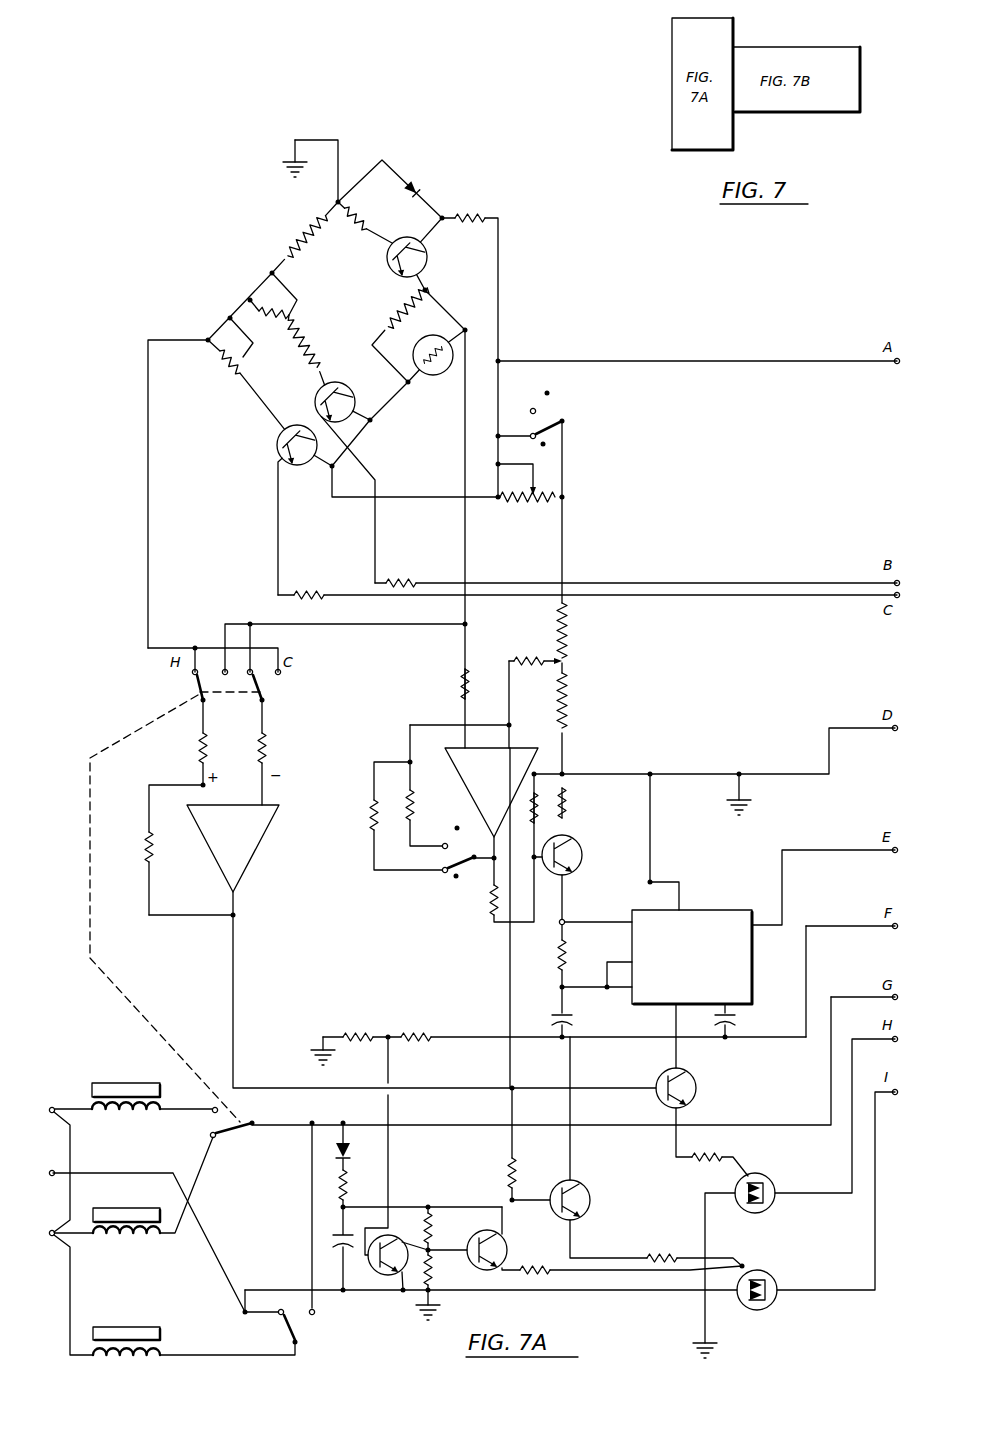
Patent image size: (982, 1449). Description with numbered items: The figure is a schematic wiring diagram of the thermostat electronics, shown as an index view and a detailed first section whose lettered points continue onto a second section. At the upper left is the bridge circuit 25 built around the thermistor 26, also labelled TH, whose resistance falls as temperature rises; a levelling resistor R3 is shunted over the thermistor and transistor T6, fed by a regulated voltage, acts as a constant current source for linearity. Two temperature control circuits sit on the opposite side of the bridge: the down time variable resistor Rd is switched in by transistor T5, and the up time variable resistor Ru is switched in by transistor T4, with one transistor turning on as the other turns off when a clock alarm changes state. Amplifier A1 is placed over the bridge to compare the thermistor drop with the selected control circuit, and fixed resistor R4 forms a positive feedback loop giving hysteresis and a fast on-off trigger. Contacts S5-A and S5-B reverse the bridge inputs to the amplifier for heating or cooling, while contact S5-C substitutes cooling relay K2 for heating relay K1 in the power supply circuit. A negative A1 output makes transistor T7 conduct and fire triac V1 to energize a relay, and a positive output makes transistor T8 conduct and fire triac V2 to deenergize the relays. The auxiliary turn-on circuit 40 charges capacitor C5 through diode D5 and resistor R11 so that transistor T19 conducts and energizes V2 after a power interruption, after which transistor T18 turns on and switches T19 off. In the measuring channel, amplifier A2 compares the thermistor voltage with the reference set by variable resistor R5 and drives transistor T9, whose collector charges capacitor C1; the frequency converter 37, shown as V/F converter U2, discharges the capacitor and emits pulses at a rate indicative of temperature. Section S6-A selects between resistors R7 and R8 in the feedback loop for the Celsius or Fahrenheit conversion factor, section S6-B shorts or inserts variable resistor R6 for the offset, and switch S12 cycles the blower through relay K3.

The bridge circuit 25 is at (278, 250).
The thermistor 26 is at (448, 372).
The frequency converter 37 is at (712, 909).
The auxiliary turn-on circuit 40 is at (423, 1198).
The variable resistor Ru is at (241, 373).
The variable resistor Rd is at (287, 329).
The levelling resistor R3 is at (400, 333).
The fixed resistor R4 is at (174, 850).
The variable resistor R5 is at (551, 688).
The variable resistor R6 is at (530, 491).
The resistor R7 is at (394, 816).
The resistor R8 is at (424, 785).
The resistor R11 is at (358, 1188).
The transistor T4 is at (287, 506).
The transistor T5 is at (341, 475).
The transistor T6 is at (414, 254).
The transistor T7 is at (630, 1122).
The transistor T8 is at (625, 1151).
The transistor T9 is at (569, 853).
The transistor T18 is at (396, 1192).
The transistor T19 is at (585, 1240).
The thermistor TH is at (427, 380).
The amplifier A1 is at (233, 848).
The amplifier A2 is at (491, 792).
The V/F converter U2 is at (692, 957).
The capacitor C1 is at (574, 1025).
The capacitor C5 is at (334, 1248).
The diode D5 is at (354, 1146).
The triac V1 is at (800, 1191).
The triac V2 is at (570, 1201).
The heating relay K1 is at (131, 1197).
The cooling relay K2 is at (133, 1108).
The relay K3 is at (126, 1331).
The switch contact S5-A is at (169, 689).
The switch contact S5-B is at (285, 689).
The switch contact S5-C is at (240, 1139).
The switch section S6-A is at (425, 865).
The switch section S6-B is at (550, 425).
The switch S12 is at (249, 1322).